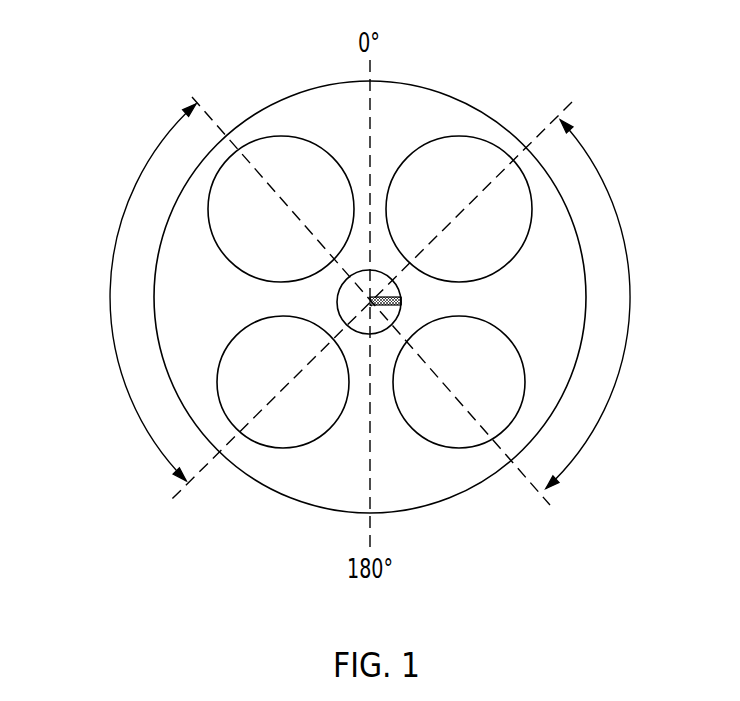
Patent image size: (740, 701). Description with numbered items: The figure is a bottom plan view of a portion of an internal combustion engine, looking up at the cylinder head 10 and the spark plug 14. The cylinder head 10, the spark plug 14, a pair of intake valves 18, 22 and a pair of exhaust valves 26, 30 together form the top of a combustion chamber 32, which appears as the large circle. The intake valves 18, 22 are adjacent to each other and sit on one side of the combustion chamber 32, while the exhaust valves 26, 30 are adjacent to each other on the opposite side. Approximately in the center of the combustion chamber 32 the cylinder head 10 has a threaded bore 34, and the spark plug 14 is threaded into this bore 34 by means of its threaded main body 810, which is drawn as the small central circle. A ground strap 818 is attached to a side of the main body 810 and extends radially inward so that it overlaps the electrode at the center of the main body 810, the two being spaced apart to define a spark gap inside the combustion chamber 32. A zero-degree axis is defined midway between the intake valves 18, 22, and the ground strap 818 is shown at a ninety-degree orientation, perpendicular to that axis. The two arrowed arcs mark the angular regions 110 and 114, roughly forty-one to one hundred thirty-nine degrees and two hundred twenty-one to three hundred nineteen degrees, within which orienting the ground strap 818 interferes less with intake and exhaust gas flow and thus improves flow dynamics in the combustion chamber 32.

The cylinder head 10 is at (407, 85).
The spark plug 14 is at (368, 298).
The intake valve 18 is at (285, 147).
The intake valve 22 is at (483, 147).
The exhaust valve 26 is at (258, 432).
The exhaust valve 30 is at (460, 438).
The combustion chamber 32 is at (317, 457).
The threaded bore 34 is at (401, 307).
The angular region 110 is at (593, 162).
The angular region 114 is at (147, 162).
The main body 810 is at (337, 305).
The ground strap 818 is at (372, 306).